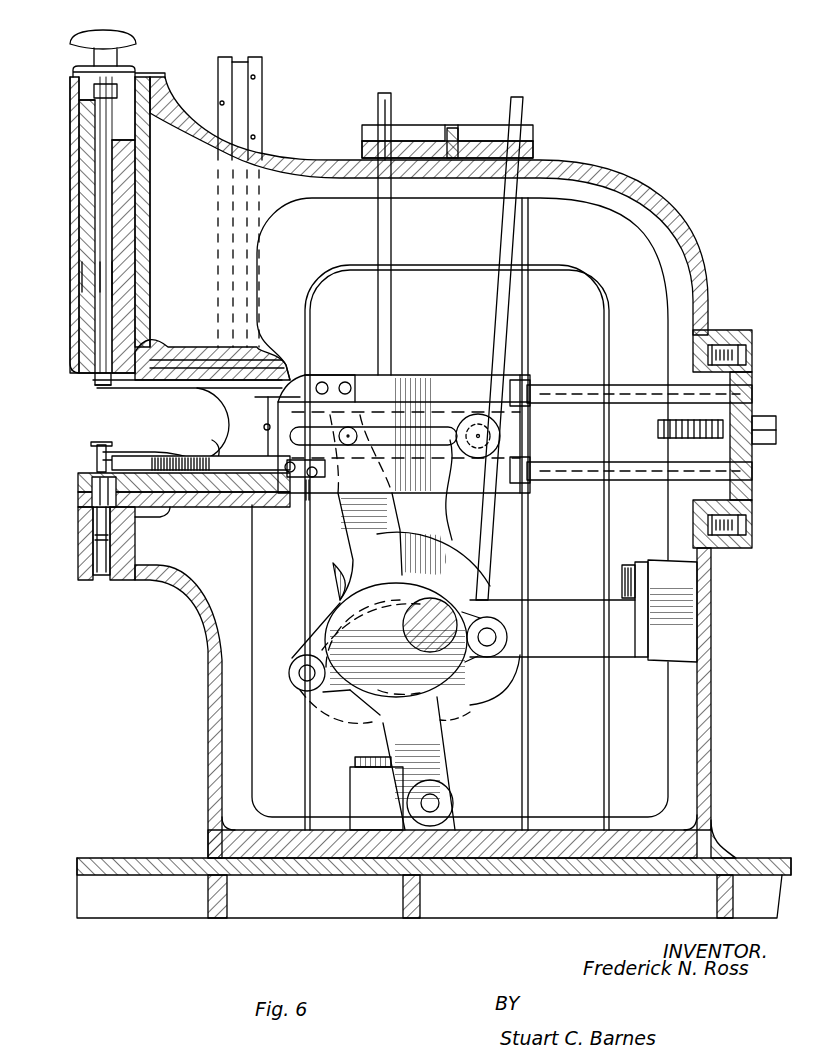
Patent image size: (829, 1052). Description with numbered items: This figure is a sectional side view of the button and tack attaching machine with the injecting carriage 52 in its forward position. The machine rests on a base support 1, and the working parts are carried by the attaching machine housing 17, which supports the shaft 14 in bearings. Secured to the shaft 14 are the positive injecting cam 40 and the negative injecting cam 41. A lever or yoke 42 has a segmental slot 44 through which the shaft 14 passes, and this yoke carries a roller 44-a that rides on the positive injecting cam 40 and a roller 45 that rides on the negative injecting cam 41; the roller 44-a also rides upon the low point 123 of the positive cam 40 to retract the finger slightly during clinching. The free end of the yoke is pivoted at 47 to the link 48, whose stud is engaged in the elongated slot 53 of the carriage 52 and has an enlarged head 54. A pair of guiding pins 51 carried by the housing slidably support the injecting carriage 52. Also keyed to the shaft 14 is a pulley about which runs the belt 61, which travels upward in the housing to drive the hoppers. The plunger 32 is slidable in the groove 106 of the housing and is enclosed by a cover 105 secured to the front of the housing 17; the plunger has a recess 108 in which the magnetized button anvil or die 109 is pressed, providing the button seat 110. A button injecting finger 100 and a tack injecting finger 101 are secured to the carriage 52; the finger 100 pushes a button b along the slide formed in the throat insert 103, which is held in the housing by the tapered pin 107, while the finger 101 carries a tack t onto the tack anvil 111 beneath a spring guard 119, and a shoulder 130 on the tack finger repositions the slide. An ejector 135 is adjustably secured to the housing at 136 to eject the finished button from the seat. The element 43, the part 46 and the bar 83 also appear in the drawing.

The base support 1 is at (175, 915).
The shaft 14 is at (487, 737).
The attaching machine housing 17 is at (205, 605).
The plunger 32 is at (158, 199).
The positive injecting cam 40 is at (392, 695).
The negative injecting cam 41 is at (452, 554).
The lever or yoke 42 is at (440, 770).
The pin 43 is at (440, 803).
The segmental slot 44 is at (323, 617).
The roller 44-a is at (492, 656).
The roller 45 is at (305, 692).
The link 46 is at (396, 512).
The pivot 47 is at (334, 483).
The link 48 is at (445, 414).
The guiding pins 51 is at (640, 396).
The injecting carriage 52 is at (440, 380).
The elongated slot 53 is at (458, 490).
The enlarged head 54 is at (500, 440).
The belt 61 is at (513, 106).
The bar 83 is at (262, 96).
The button injecting finger 100 is at (190, 398).
The tack injecting finger 101 is at (202, 443).
The throat insert 103 is at (118, 445).
The cover 105 is at (72, 134).
The groove 106 is at (181, 103).
The tapered pin 107 is at (228, 507).
The recess 108 is at (132, 283).
The button anvil or die 109 is at (96, 273).
The button seat 110 is at (148, 328).
The tack anvil 111 is at (93, 503).
The spring guard 119 is at (198, 427).
The low point 123 is at (485, 700).
The shoulder 130 is at (300, 502).
The ejector 135 is at (140, 160).
The securing means 136 is at (118, 66).
The button b is at (97, 386).
The tack t is at (92, 458).